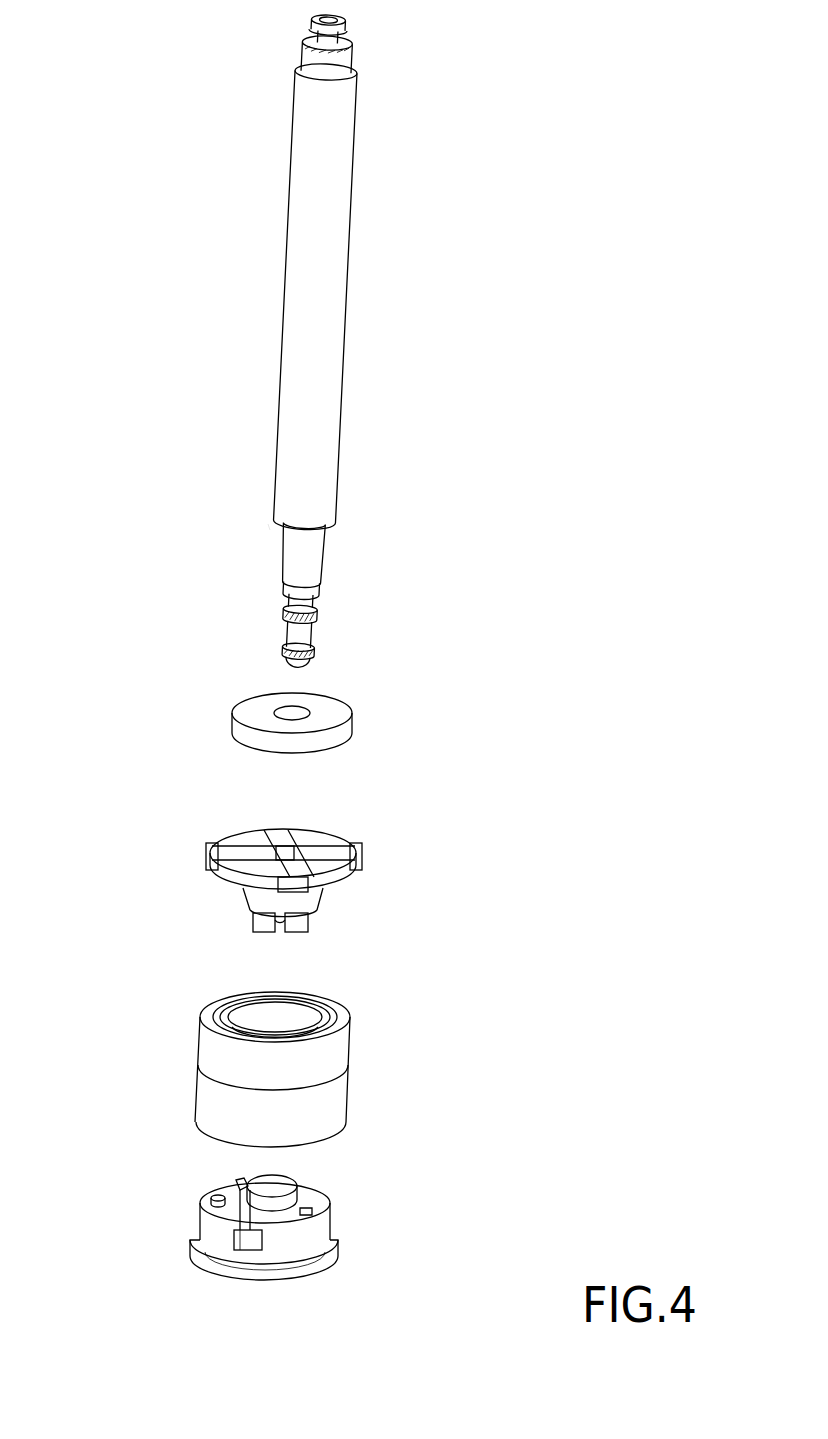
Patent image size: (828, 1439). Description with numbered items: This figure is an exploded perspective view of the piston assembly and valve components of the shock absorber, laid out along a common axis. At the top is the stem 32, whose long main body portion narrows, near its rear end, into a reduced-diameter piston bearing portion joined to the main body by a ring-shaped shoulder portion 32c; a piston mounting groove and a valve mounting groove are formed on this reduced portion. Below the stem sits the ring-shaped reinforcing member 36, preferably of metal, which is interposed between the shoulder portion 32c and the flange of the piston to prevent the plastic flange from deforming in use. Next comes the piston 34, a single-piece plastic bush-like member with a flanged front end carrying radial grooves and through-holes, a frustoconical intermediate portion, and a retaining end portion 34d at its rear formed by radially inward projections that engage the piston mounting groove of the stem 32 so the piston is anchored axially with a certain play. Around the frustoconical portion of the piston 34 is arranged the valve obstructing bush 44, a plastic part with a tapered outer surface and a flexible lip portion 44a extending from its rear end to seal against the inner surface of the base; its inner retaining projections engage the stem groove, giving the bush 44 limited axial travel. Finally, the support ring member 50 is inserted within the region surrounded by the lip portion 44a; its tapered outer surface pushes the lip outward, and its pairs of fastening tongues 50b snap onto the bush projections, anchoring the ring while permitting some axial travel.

The stem 32 is at (299, 341).
The ring-shaped shoulder portion 32c is at (268, 524).
The reinforcing member 36 is at (355, 731).
The piston 34 is at (272, 869).
The retaining end portion 34d is at (255, 918).
The bush 44 is at (266, 1048).
The flexible lip portion 44a is at (194, 1114).
The support ring member 50 is at (259, 1253).
The fastening tongues 50b is at (248, 1226).